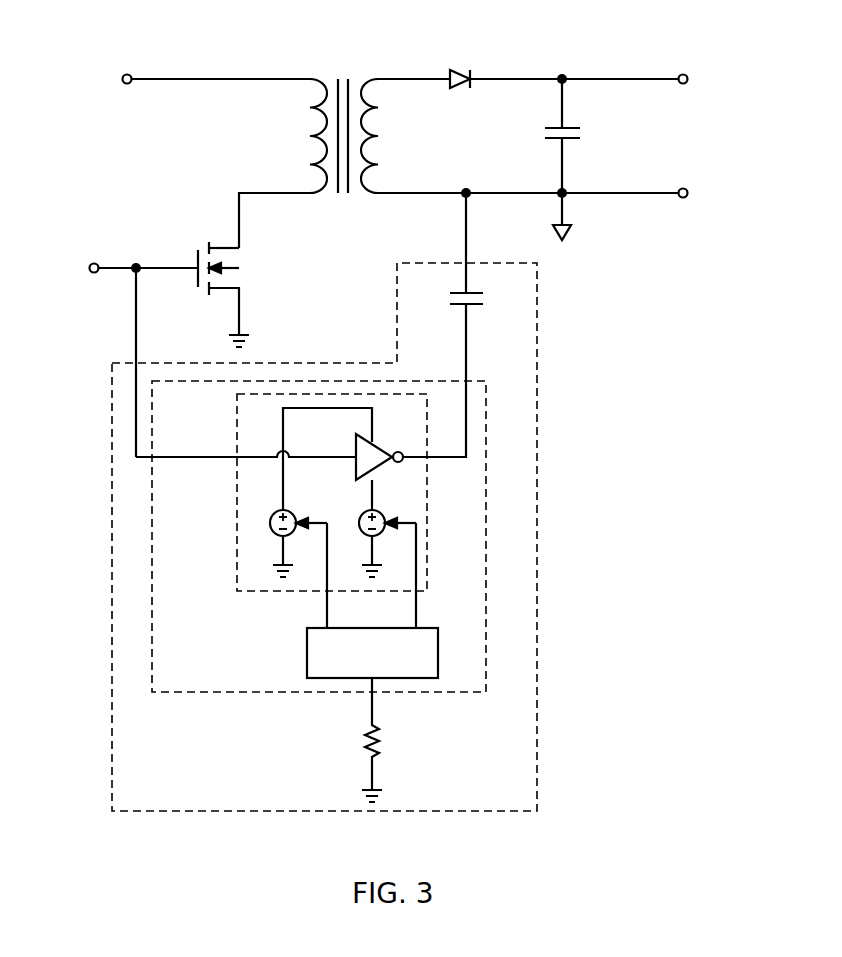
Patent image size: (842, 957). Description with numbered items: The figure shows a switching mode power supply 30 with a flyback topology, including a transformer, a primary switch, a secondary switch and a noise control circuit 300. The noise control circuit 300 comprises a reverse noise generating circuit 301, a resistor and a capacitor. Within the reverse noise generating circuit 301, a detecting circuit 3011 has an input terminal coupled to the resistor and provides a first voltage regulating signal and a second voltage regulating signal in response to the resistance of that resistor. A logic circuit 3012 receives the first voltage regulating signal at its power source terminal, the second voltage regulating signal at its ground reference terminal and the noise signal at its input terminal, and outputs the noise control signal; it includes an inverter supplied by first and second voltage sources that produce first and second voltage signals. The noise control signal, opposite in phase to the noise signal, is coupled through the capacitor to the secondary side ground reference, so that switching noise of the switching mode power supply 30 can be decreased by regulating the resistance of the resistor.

The switching mode power supply 30 is at (661, 45).
The noise control circuit 300 is at (324, 502).
The reverse noise generating circuit 301 is at (311, 536).
The detecting circuit 3011 is at (372, 653).
The logic circuit 3012 is at (237, 581).